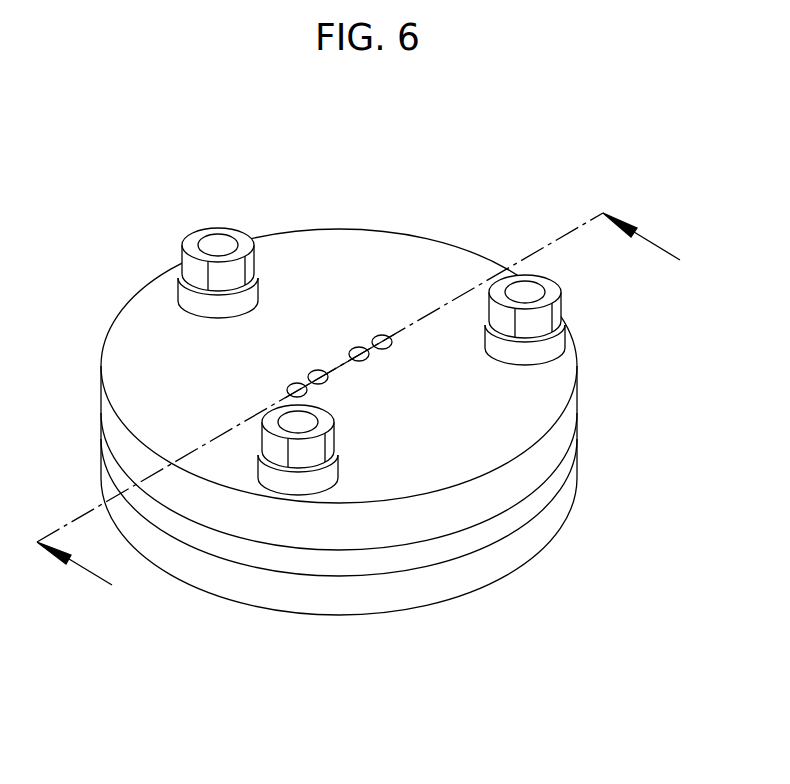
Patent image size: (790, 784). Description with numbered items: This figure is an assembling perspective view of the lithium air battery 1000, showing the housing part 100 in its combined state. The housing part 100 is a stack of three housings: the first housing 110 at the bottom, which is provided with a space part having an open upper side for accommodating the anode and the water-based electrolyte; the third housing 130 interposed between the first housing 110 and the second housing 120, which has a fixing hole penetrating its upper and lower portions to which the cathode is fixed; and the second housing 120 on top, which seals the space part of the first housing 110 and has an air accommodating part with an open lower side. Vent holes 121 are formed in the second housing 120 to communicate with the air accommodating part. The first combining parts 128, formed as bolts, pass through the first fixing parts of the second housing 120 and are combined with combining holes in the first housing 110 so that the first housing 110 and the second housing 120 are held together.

The lithium air battery 1000 is at (372, 388).
The housing part 100 is at (389, 449).
The first housing 110 is at (400, 600).
The second housing 120 is at (475, 503).
The third housing 130 is at (558, 478).
The vent hole 121 is at (354, 347).
The first combining part 128 is at (527, 293).